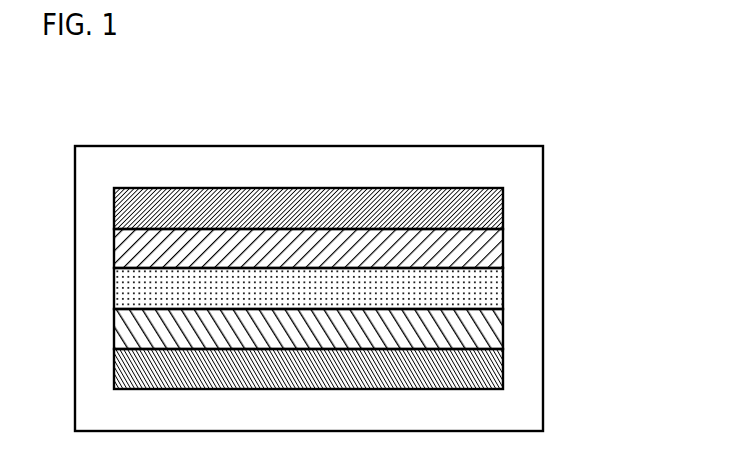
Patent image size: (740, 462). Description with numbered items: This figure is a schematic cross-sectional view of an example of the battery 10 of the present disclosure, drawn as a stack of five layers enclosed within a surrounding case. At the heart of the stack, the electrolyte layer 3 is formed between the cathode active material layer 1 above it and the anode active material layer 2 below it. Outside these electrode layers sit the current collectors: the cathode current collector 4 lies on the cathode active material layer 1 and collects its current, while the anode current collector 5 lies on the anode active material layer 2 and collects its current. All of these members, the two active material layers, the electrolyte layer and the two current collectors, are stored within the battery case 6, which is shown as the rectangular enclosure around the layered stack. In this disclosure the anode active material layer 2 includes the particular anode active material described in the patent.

The battery 10 is at (339, 257).
The battery case 6 is at (517, 174).
The cathode current collector 4 is at (478, 208).
The cathode active material layer 1 is at (478, 248).
The electrolyte layer 3 is at (478, 294).
The anode active material layer 2 is at (478, 333).
The anode current collector 5 is at (478, 372).